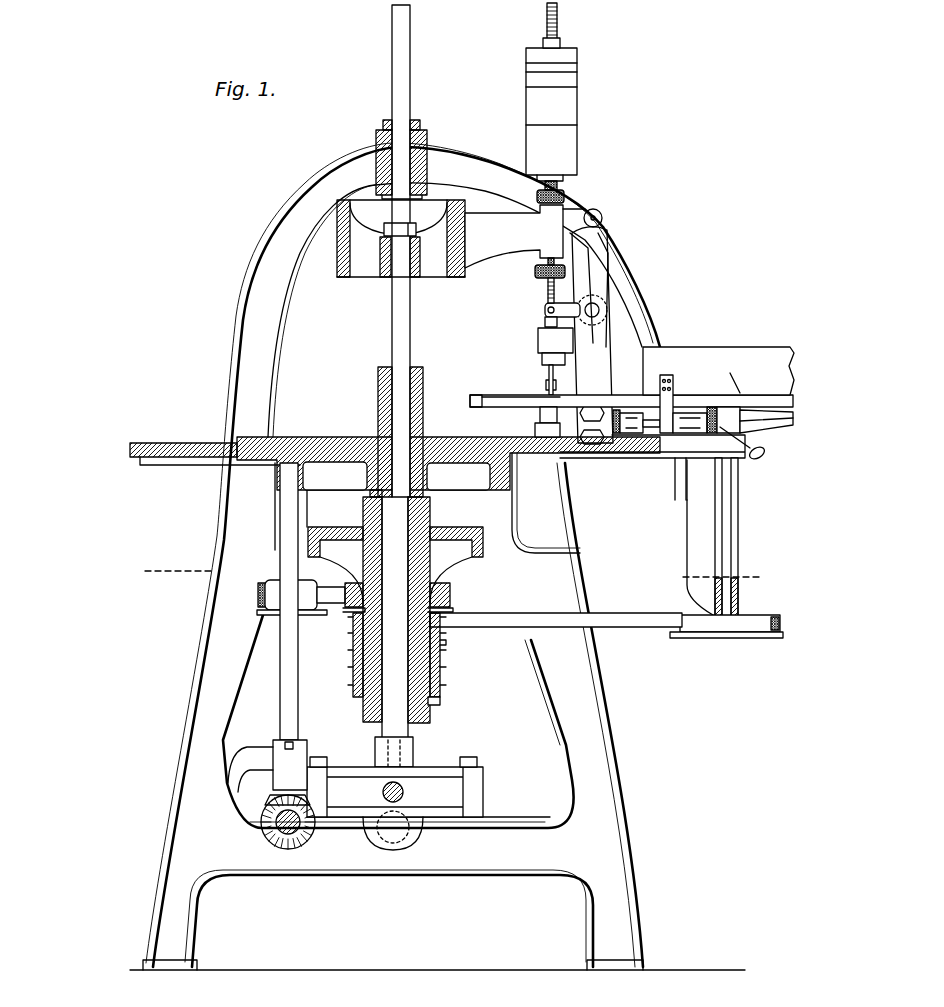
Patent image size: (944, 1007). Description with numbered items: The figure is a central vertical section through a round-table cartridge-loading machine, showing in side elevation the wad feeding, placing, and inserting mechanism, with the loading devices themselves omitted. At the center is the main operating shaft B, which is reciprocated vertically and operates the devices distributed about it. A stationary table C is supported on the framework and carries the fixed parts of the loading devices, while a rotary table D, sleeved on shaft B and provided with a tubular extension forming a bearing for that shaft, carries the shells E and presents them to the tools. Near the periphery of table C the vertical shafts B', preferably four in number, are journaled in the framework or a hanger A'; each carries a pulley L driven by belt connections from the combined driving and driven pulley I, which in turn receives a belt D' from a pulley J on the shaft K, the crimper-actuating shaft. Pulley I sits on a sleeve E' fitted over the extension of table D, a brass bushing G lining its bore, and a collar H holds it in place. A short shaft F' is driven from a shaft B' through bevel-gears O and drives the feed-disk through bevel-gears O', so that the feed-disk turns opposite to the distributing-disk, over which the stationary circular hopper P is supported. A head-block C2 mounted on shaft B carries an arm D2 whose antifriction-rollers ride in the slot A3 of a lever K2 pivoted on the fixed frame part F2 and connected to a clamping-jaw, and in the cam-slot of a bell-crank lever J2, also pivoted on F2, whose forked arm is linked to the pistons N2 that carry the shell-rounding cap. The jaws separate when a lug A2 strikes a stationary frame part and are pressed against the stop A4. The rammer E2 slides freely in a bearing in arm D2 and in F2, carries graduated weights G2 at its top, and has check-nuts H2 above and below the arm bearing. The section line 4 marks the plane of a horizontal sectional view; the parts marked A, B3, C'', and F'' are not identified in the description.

The frame A is at (437, 556).
The hanger A' is at (661, 510).
The lug A2 is at (520, 395).
The slot A3 is at (600, 270).
The stop A4 is at (488, 396).
The central main or operating shaft B is at (407, 386).
The vertical shafts B' is at (743, 537).
The link B3 is at (598, 233).
The stationary table C is at (215, 439).
The lever bar C'' is at (556, 642).
The head-block C2 is at (346, 278).
The rotary table D is at (448, 449).
The belt D' is at (345, 606).
The arm D2 is at (514, 236).
The shells E is at (521, 422).
The sleeve E' is at (450, 710).
The rammer E2 is at (548, 300).
The short shaft F' is at (452, 610).
The connecting link F'' is at (670, 522).
The fixed part of the framework F2 is at (556, 344).
The bushing G is at (437, 664).
The weights G2 is at (573, 63).
The collar H is at (360, 722).
The check-nuts H2 is at (565, 195).
The combined driving and driven pulley I is at (437, 656).
The pulley J is at (301, 597).
The bell-crank lever J2 is at (590, 312).
The shaft K is at (298, 688).
The lever K2 is at (605, 318).
The pulley L is at (757, 634).
The pistons N2 is at (546, 377).
The bevel-gears O is at (756, 438).
The bevel-gears O' is at (652, 401).
The hopper P is at (718, 371).
The section line 4 is at (452, 575).